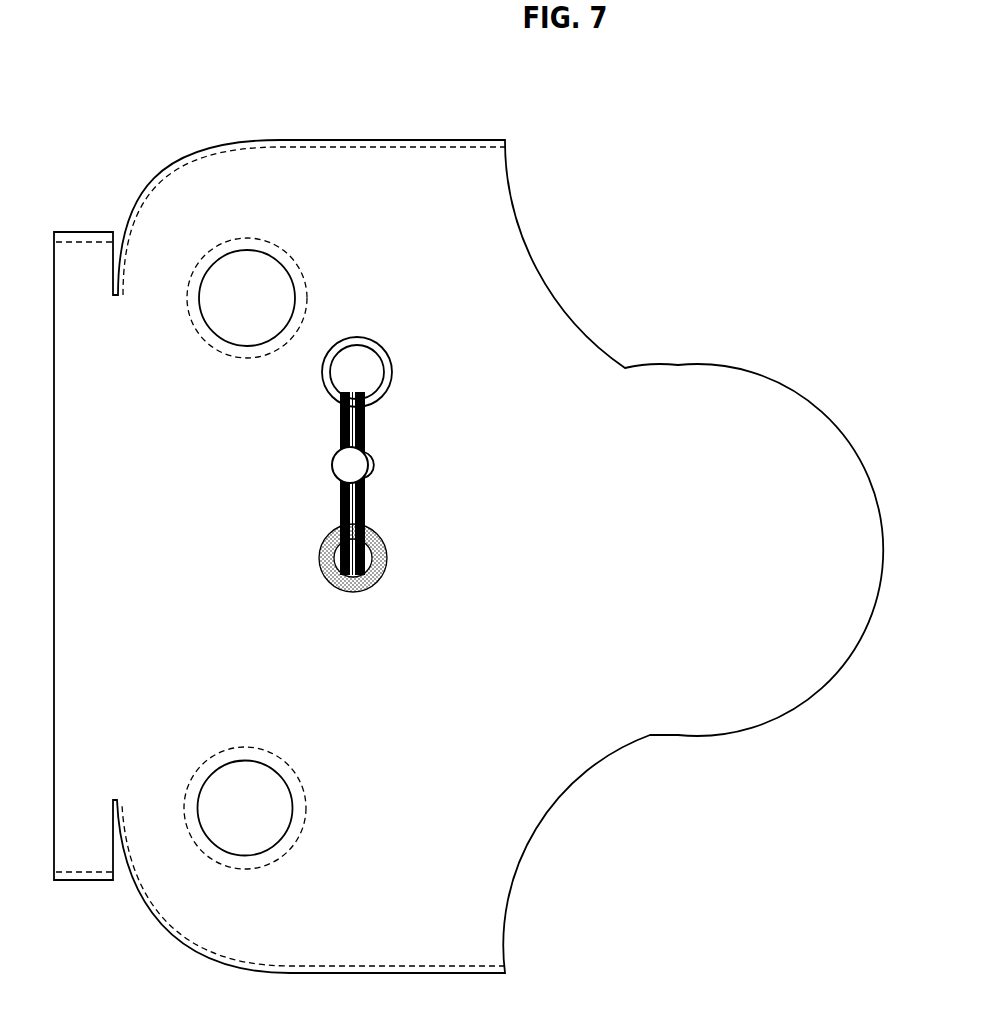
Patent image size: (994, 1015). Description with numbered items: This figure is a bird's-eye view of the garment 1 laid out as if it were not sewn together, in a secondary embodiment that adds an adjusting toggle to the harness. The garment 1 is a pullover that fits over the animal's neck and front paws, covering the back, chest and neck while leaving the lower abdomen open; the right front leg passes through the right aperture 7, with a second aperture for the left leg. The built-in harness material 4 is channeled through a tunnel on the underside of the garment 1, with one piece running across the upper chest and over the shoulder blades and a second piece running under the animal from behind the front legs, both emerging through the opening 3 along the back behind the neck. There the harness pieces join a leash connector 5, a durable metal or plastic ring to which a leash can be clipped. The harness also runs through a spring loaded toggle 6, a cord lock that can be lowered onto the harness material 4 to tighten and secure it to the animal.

The garment 1 is at (380, 227).
The opening 3 is at (388, 552).
The harness material 4 is at (340, 430).
The leash connector 5 is at (388, 373).
The toggle 6 is at (347, 475).
The right aperture 7 is at (253, 282).